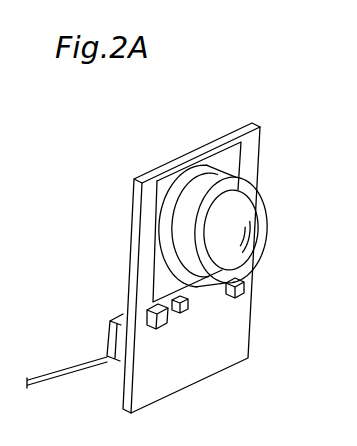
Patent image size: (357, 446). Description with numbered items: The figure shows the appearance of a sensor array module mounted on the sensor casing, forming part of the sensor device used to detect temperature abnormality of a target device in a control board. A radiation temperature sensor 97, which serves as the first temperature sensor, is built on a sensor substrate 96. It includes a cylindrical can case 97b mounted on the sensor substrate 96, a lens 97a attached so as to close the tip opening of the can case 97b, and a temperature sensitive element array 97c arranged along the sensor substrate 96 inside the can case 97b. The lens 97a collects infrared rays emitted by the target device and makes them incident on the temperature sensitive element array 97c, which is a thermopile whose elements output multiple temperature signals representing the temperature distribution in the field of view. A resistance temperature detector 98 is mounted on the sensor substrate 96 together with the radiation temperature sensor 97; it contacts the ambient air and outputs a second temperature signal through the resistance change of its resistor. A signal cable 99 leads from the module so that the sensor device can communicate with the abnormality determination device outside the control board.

The sensor substrate 96 is at (132, 216).
The radiation temperature sensor 97 is at (243, 199).
The lens 97a is at (252, 241).
The can case 97b is at (193, 188).
The temperature sensitive element array 97c is at (234, 225).
The resistance temperature detector 98 is at (150, 308).
The signal cable 99 is at (62, 378).